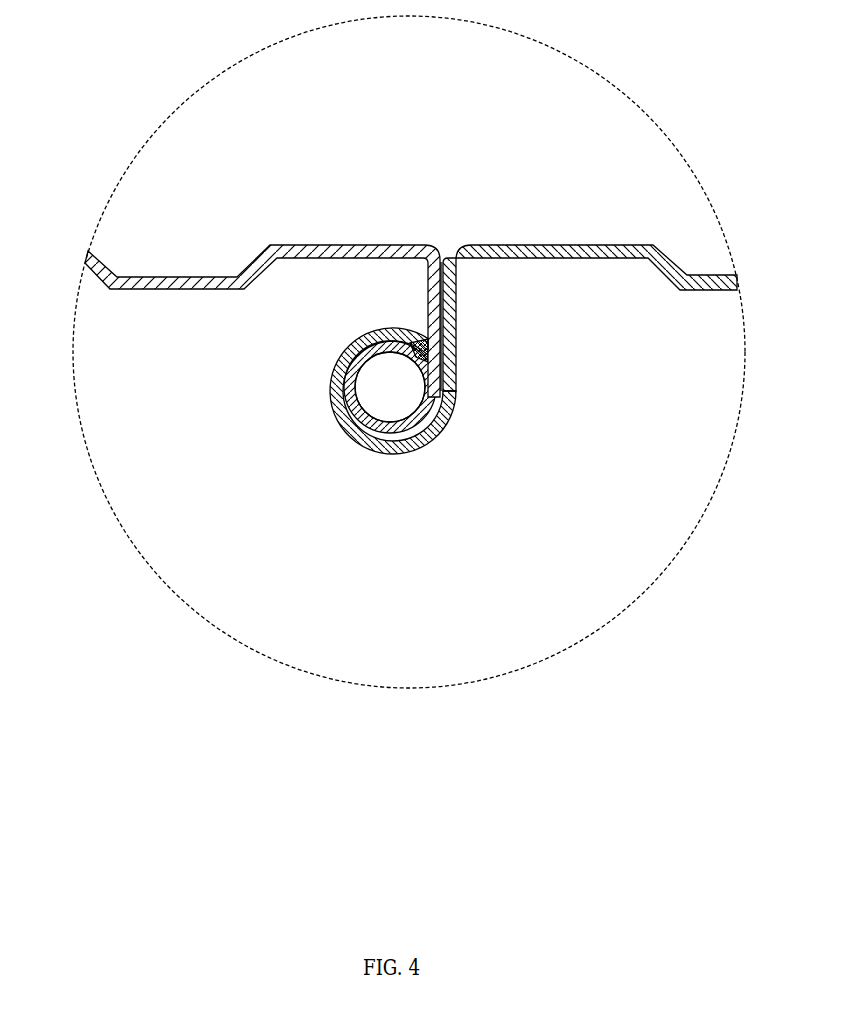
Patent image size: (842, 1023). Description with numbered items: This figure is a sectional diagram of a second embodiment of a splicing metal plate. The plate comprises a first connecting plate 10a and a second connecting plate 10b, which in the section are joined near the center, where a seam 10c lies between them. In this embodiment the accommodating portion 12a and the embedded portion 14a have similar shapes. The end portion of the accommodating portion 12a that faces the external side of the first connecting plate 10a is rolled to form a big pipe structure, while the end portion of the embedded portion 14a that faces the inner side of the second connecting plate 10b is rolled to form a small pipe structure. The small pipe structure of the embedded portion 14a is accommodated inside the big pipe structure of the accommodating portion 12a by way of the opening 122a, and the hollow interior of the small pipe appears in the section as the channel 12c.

The first connecting plate 10a is at (633, 247).
The second connecting plate 10b is at (193, 277).
The seam between plate portions 10c is at (420, 307).
The accommodating portion 12a is at (401, 453).
The channel 12c is at (383, 388).
The embedded portion 14a is at (347, 405).
The opening 122a is at (432, 345).